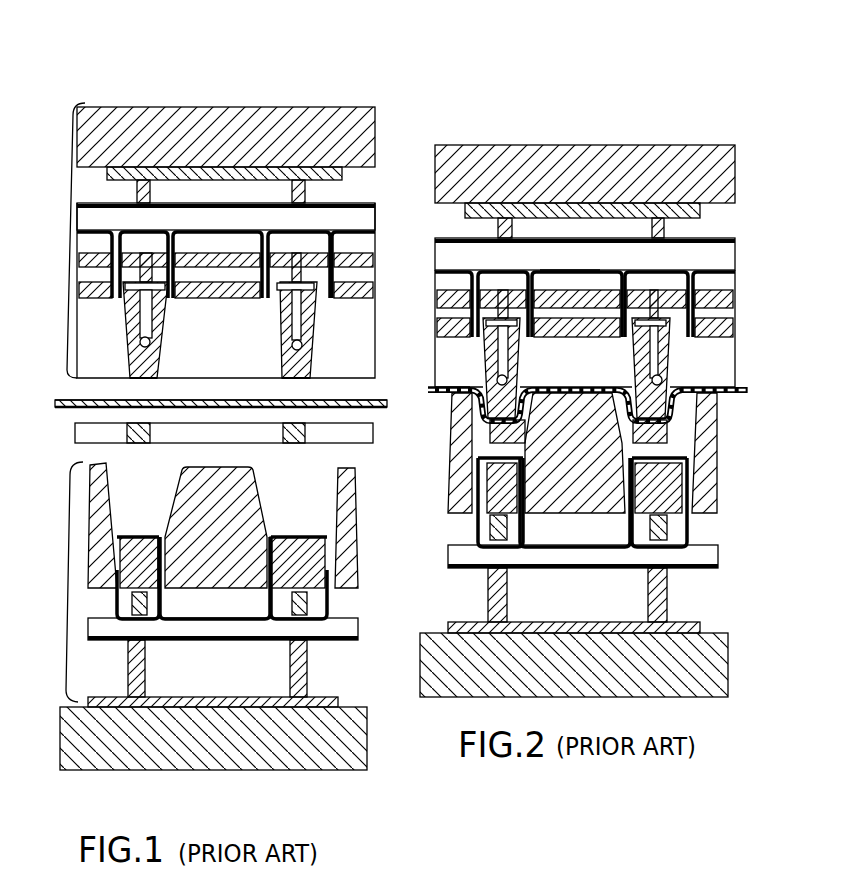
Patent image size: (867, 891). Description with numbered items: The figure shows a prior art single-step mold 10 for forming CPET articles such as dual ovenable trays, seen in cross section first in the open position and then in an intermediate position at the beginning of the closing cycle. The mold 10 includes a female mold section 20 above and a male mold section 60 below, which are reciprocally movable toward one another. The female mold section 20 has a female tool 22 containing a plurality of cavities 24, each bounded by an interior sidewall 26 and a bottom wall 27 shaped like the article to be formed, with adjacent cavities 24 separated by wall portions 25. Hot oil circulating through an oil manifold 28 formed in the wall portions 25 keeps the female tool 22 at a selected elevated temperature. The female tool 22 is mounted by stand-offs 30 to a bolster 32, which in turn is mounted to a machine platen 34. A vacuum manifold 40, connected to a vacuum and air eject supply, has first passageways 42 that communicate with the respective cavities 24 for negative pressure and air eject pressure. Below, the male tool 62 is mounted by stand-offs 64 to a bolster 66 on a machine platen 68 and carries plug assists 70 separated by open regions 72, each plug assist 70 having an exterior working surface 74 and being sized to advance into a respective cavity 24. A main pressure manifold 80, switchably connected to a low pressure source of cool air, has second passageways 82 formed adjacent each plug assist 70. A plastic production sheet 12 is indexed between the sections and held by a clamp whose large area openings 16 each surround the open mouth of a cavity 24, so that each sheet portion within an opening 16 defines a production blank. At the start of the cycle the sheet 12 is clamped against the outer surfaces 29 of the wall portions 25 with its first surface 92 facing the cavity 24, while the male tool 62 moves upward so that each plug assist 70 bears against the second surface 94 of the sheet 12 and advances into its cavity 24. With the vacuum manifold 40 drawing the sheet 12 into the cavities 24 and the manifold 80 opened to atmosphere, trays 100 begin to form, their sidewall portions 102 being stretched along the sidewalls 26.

In FIG. 1, the mold 10 is at (313, 75).
In FIG. 1, the production sheet 12 is at (117, 400).
In FIG. 1, the large area openings 16 is at (189, 442).
In FIG. 1, the female mold section 20 is at (62, 228).
In FIG. 1, the female tool 22 is at (282, 248).
In FIG. 2, the female tool 22 is at (727, 295).
In FIG. 1, the cavities 24 is at (114, 335).
In FIG. 2, the cavities 24 is at (474, 363).
In FIG. 1, the wall portions 25 is at (130, 362).
In FIG. 1, the interior sidewall 26 is at (277, 358).
In FIG. 1, the bottom wall 27 is at (247, 300).
In FIG. 2, the bottom wall 27 is at (608, 340).
In FIG. 1, the oil manifold 28 is at (330, 290).
In FIG. 1, the outer surfaces 29 is at (152, 378).
In FIG. 1, the stand-offs 30 is at (278, 180).
In FIG. 1, the bolster 32 is at (300, 182).
In FIG. 1, the machine platen 34 is at (142, 110).
In FIG. 2, the machine platen 34 is at (573, 153).
In FIG. 1, the vacuum manifold 40 is at (230, 230).
In FIG. 2, the vacuum manifold 40 is at (580, 265).
In FIG. 1, the first passageways 42 is at (377, 229).
In FIG. 2, the first passageways 42 is at (435, 305).
In FIG. 1, the male mold section 60 is at (58, 585).
In FIG. 1, the male tool 62 is at (360, 570).
In FIG. 2, the male tool 62 is at (450, 492).
In FIG. 1, the stand-offs 64 is at (145, 650).
In FIG. 1, the bolster 66 is at (197, 697).
In FIG. 1, the machine platen 68 is at (313, 769).
In FIG. 2, the machine platen 68 is at (668, 697).
In FIG. 1, the plug assists 70 is at (102, 497).
In FIG. 1, the open regions 72 is at (152, 530).
In FIG. 1, the exterior working surface 74 is at (207, 465).
In FIG. 1, the main pressure manifold 80 is at (273, 641).
In FIG. 2, the main pressure manifold 80 is at (550, 557).
In FIG. 1, the second passageways 82 is at (112, 607).
In FIG. 1, the first surface 92 is at (360, 405).
In FIG. 2, the first surface 92 is at (722, 389).
In FIG. 1, the second surface 94 is at (117, 403).
In FIG. 2, the trays 100 is at (433, 387).
In FIG. 2, the sidewall portions 102 is at (490, 422).